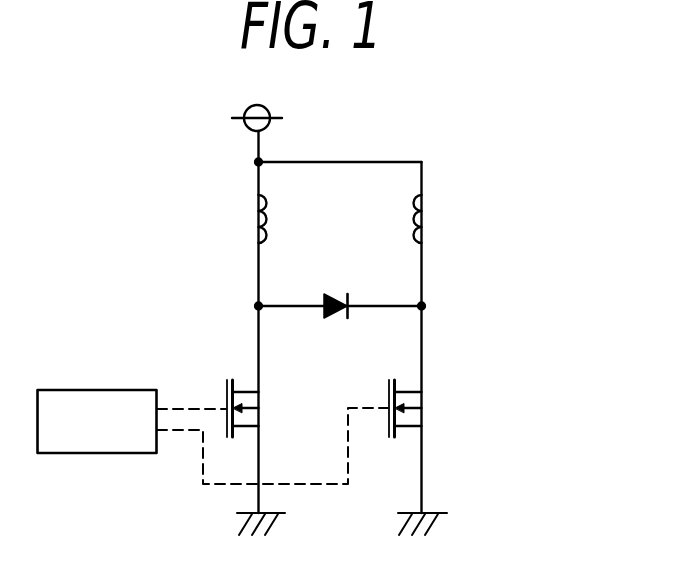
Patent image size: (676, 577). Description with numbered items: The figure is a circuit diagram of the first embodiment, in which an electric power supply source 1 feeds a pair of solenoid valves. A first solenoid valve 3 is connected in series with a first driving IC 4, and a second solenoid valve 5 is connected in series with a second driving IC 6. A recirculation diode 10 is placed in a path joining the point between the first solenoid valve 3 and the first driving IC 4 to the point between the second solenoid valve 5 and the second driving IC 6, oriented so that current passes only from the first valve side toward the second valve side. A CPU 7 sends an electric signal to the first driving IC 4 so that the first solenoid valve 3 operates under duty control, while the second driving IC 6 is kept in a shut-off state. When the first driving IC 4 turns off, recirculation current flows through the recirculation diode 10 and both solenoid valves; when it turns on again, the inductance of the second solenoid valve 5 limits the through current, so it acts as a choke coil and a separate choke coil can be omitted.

The electric power supply source 1 is at (243, 111).
The first solenoid valve 3 is at (257, 199).
The second solenoid valve 5 is at (424, 200).
The recirculation diode 10 is at (333, 317).
The first driving IC 4 is at (229, 385).
The second driving IC 6 is at (422, 407).
The CPU 7 is at (100, 390).